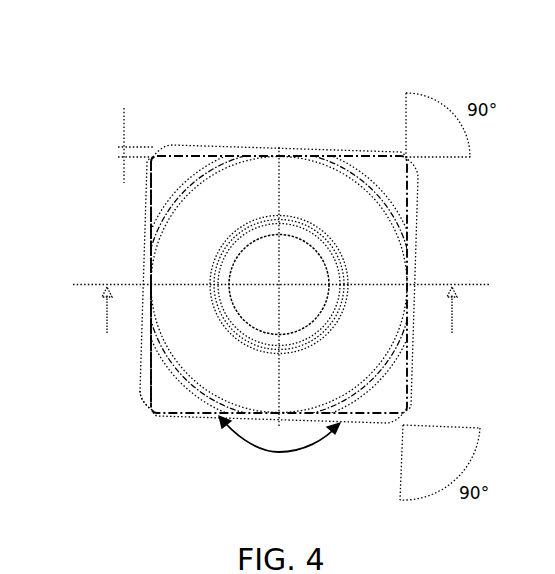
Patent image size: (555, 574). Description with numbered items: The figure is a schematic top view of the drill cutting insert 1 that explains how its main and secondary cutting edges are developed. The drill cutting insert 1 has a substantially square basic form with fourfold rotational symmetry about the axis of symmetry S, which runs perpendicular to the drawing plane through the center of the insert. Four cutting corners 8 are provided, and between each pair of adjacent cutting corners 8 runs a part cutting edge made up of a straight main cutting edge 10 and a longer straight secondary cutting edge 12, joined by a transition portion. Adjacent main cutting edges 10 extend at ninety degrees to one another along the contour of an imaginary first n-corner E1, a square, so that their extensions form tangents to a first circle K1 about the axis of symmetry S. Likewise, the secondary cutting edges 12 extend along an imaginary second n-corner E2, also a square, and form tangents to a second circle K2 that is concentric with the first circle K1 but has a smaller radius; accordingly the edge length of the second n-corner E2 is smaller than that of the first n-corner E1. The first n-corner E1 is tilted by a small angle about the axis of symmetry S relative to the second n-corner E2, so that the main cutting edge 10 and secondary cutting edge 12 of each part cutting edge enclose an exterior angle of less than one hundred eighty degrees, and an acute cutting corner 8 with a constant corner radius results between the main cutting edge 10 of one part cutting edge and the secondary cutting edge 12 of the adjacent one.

The drill cutting insert 1 is at (48, 140).
The cutting corner 8 is at (147, 403).
The main cutting edge 10 is at (213, 148).
The secondary cutting edge 12 is at (335, 157).
The axis of symmetry S is at (279, 284).
The first n-corner E1 is at (150, 247).
The second n-corner E2 is at (153, 383).
The first circle K1 is at (384, 364).
The second circle K2 is at (382, 207).